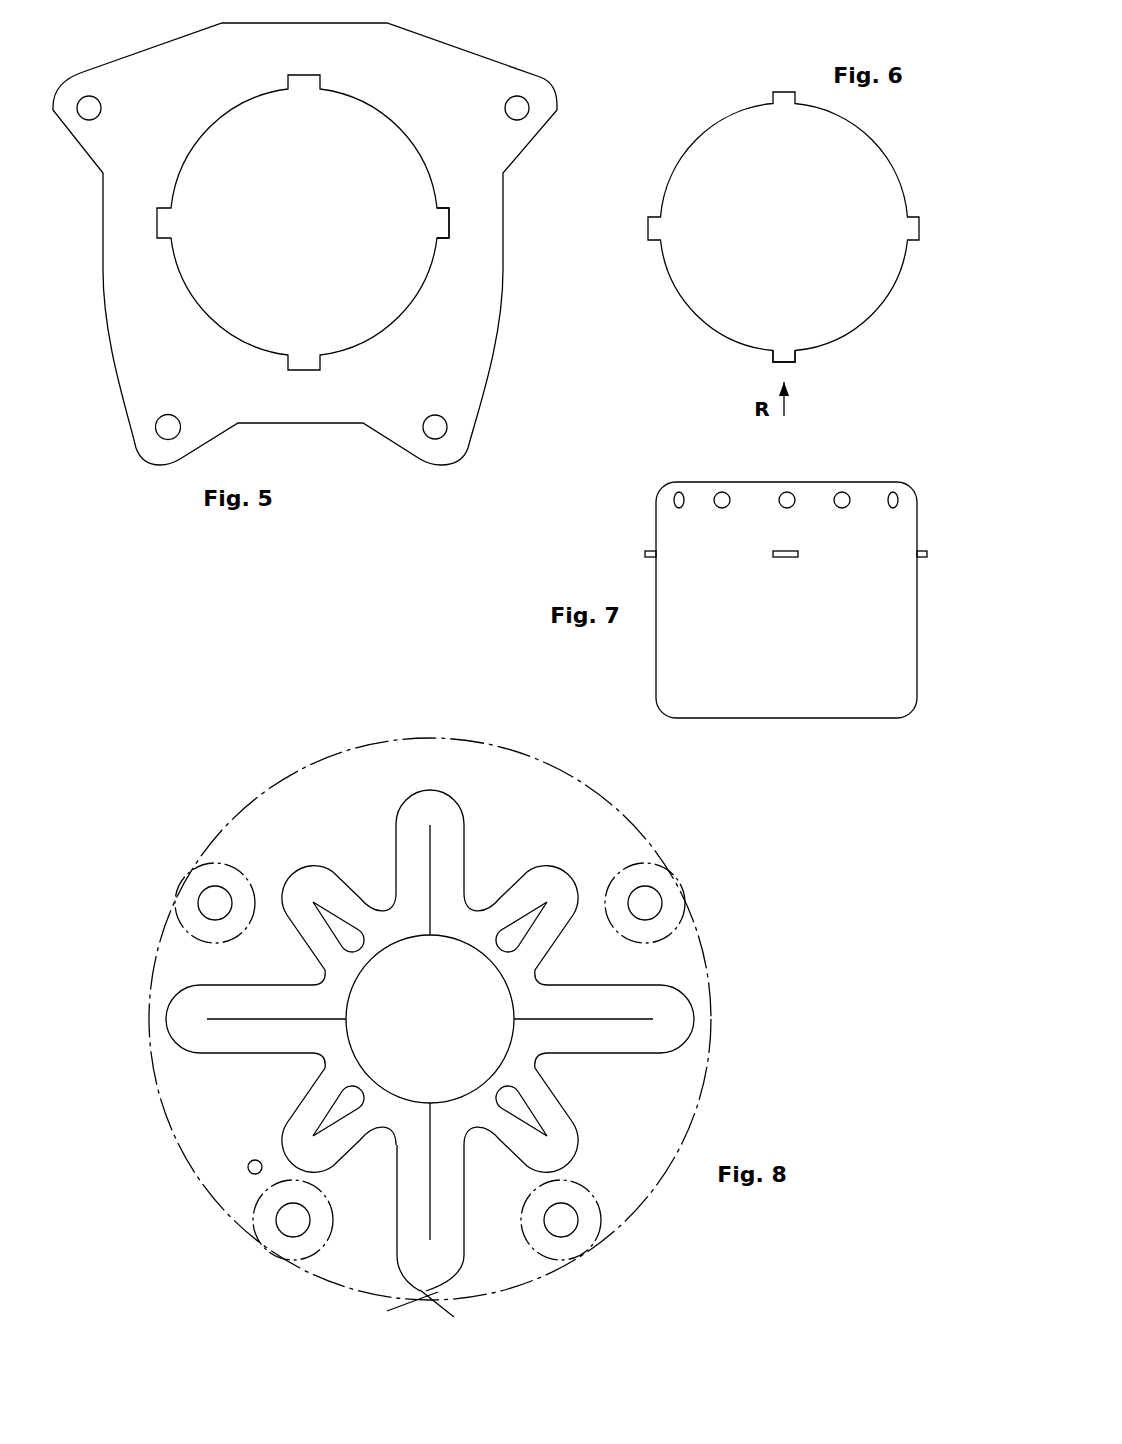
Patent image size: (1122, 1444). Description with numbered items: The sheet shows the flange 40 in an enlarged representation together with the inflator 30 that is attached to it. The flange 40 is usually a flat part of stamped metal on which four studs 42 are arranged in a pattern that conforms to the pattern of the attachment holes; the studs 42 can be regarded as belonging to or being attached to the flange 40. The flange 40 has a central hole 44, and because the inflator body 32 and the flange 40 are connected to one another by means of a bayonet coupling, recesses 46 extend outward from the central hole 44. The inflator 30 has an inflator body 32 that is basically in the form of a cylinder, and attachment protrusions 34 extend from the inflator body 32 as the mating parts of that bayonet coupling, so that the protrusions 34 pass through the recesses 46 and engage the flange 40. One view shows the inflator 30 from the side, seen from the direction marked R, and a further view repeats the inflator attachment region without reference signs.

In FIG. 6, the inflator 30 is at (796, 211).
In FIG. 6, the inflator body 32 is at (843, 165).
In FIG. 7, the inflator body 32 is at (680, 652).
In FIG. 6, the attachment protrusions 34 is at (785, 358).
In FIG. 7, the attachment protrusions 34 is at (790, 557).
In FIG. 5, the flange 40 is at (352, 455).
In FIG. 5, the studs 42 is at (91, 107).
In FIG. 5, the central hole 44 is at (234, 290).
In FIG. 5, the recesses 46 is at (445, 223).